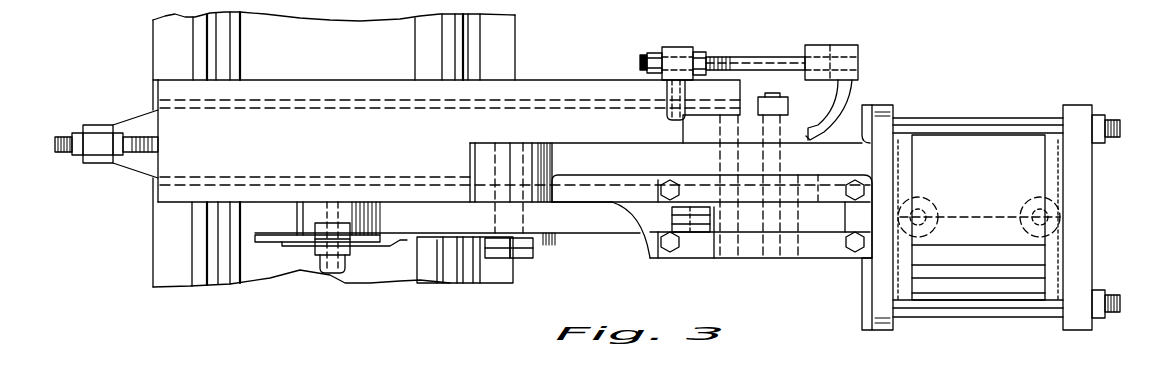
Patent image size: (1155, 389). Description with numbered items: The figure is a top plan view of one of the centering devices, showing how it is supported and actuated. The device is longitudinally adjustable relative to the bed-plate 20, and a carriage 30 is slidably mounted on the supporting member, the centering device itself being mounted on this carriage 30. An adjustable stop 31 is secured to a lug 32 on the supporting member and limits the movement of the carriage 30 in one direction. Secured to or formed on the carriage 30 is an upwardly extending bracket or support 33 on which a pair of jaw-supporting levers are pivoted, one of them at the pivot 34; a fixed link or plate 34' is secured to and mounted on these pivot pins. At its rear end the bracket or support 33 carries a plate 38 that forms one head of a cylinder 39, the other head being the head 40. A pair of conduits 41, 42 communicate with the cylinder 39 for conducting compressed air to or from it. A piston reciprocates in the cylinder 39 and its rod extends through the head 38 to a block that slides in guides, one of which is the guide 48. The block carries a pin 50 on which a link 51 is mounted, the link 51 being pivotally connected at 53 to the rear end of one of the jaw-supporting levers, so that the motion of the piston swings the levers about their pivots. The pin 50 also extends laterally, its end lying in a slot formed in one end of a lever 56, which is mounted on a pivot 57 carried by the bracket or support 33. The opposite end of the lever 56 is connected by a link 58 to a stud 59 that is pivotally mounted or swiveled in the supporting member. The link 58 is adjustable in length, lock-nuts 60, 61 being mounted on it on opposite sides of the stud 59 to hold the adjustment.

The bed-plate 20 is at (500, 32).
The carriage 30 is at (548, 90).
The adjustable stop 31 is at (143, 143).
The lug 32 is at (97, 165).
The bracket or support 33 is at (595, 157).
The pivot 34 is at (410, 242).
The fixed link or plate 34' is at (541, 248).
The plate 38 is at (882, 110).
The cylinder 39 is at (970, 148).
The head 40 is at (1078, 105).
The conduit 41 is at (1032, 210).
The conduit 42 is at (936, 215).
The guide 48 is at (817, 196).
The pin 50 is at (742, 238).
The link 51 is at (714, 230).
The pivotal connection 53 is at (672, 215).
The lever 56 is at (852, 82).
The pivot 57 is at (775, 93).
The link 58 is at (774, 60).
The stud 59 is at (686, 48).
The lock-nut 60 is at (656, 50).
The lock-nut 61 is at (707, 54).